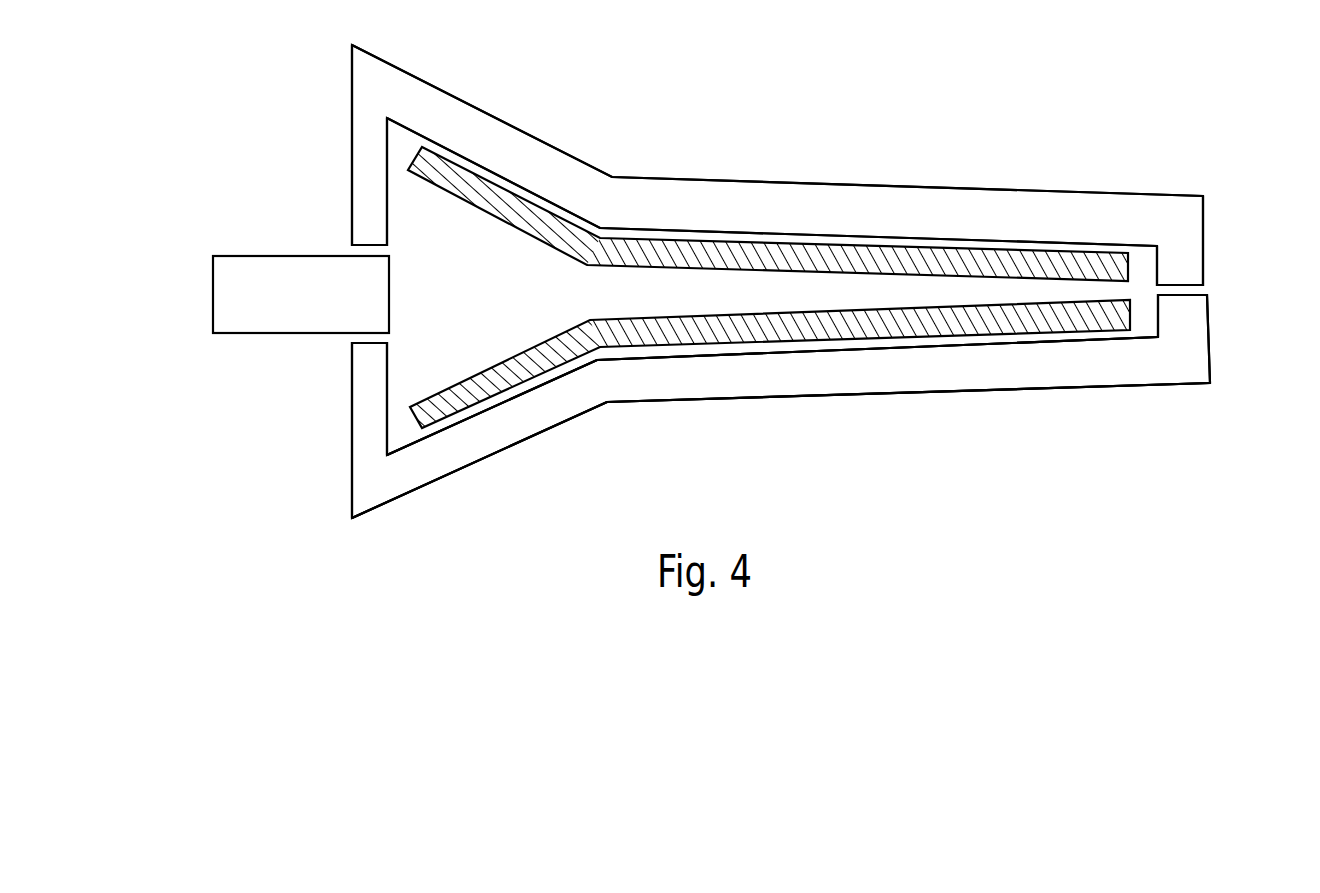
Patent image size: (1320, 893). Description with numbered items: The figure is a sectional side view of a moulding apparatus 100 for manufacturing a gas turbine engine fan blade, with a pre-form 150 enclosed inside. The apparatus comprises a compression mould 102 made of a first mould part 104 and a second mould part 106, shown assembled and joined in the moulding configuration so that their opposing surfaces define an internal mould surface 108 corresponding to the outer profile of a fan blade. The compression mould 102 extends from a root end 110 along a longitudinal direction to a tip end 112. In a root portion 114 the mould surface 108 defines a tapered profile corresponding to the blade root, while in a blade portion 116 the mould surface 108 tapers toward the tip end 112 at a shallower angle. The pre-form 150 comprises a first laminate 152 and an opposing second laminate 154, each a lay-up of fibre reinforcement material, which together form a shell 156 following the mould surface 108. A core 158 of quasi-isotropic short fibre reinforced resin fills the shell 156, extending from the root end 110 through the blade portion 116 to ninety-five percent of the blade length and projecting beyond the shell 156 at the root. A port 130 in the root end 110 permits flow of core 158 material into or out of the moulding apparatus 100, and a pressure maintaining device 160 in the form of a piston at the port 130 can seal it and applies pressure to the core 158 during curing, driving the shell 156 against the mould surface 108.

The moulding apparatus 100 is at (310, 60).
The compression mould 102 is at (1158, 188).
The first mould part 104 is at (848, 375).
The second mould part 106 is at (868, 203).
The internal mould surface 108 is at (1130, 253).
The root end 110 is at (336, 171).
The tip end 112 is at (1210, 225).
The root portion 114 is at (482, 443).
The blade portion 116 is at (949, 378).
The port 130 is at (345, 245).
The pre-form 150 is at (769, 253).
The first laminate 152 is at (522, 367).
The second laminate 154 is at (478, 193).
The shell 156 is at (443, 166).
The core 158 is at (500, 277).
The pressure maintaining device 160 is at (245, 303).